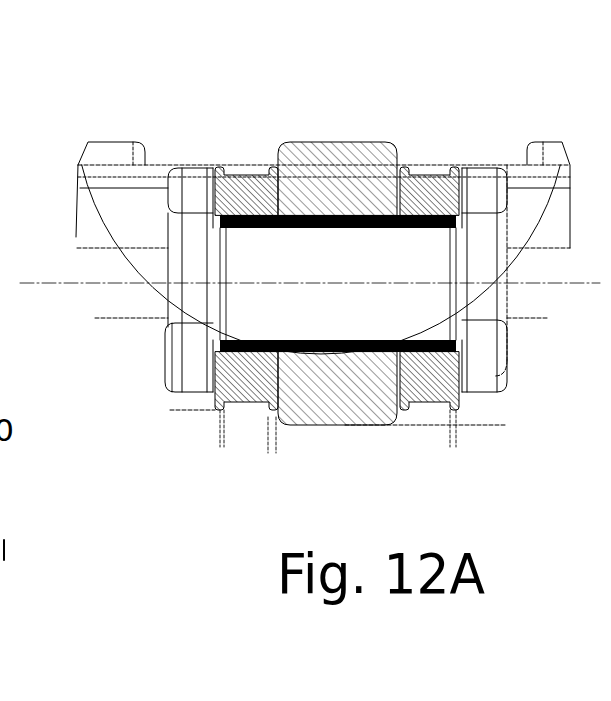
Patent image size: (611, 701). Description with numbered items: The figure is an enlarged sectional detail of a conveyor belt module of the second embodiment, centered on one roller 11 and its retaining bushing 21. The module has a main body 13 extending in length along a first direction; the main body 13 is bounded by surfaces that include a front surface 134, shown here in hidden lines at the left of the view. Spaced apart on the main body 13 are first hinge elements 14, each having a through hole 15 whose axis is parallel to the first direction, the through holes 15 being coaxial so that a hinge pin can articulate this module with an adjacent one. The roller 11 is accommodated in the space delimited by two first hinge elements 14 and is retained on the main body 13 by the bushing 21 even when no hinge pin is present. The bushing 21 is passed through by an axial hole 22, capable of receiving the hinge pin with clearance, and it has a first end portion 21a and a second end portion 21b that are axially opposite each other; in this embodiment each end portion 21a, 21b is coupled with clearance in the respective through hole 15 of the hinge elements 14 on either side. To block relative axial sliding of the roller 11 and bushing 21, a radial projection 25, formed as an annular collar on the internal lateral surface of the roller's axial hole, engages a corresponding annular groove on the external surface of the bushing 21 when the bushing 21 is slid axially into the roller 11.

The roller 11 is at (360, 112).
The main body 13 is at (99, 146).
The front surface 134 is at (105, 222).
The first hinge element 14 is at (249, 394).
The through hole 15 is at (220, 226).
The bushing 21 is at (248, 355).
The first end portion 21a is at (440, 228).
The second end portion 21b is at (220, 340).
The axial hole 22 is at (437, 341).
The radial projection 25 is at (337, 216).